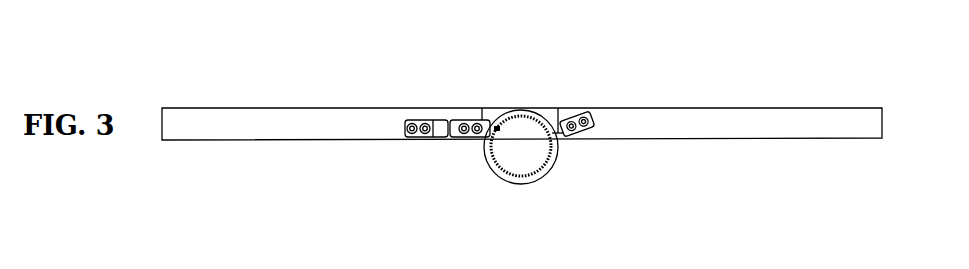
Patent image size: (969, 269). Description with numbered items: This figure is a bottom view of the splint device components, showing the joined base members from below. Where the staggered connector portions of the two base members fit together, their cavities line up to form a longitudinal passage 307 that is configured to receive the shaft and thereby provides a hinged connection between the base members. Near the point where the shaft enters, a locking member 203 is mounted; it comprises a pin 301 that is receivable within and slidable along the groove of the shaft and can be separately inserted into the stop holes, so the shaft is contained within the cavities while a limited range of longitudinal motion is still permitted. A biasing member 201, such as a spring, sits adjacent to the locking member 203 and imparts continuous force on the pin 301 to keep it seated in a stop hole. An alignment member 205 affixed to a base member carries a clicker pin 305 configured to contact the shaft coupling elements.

The biasing member 201 is at (385, 94).
The locking member 203 is at (441, 78).
The alignment member 205 is at (619, 96).
The pin 301 is at (497, 130).
The clicker pin 305 is at (556, 150).
The longitudinal passage 307 is at (520, 184).